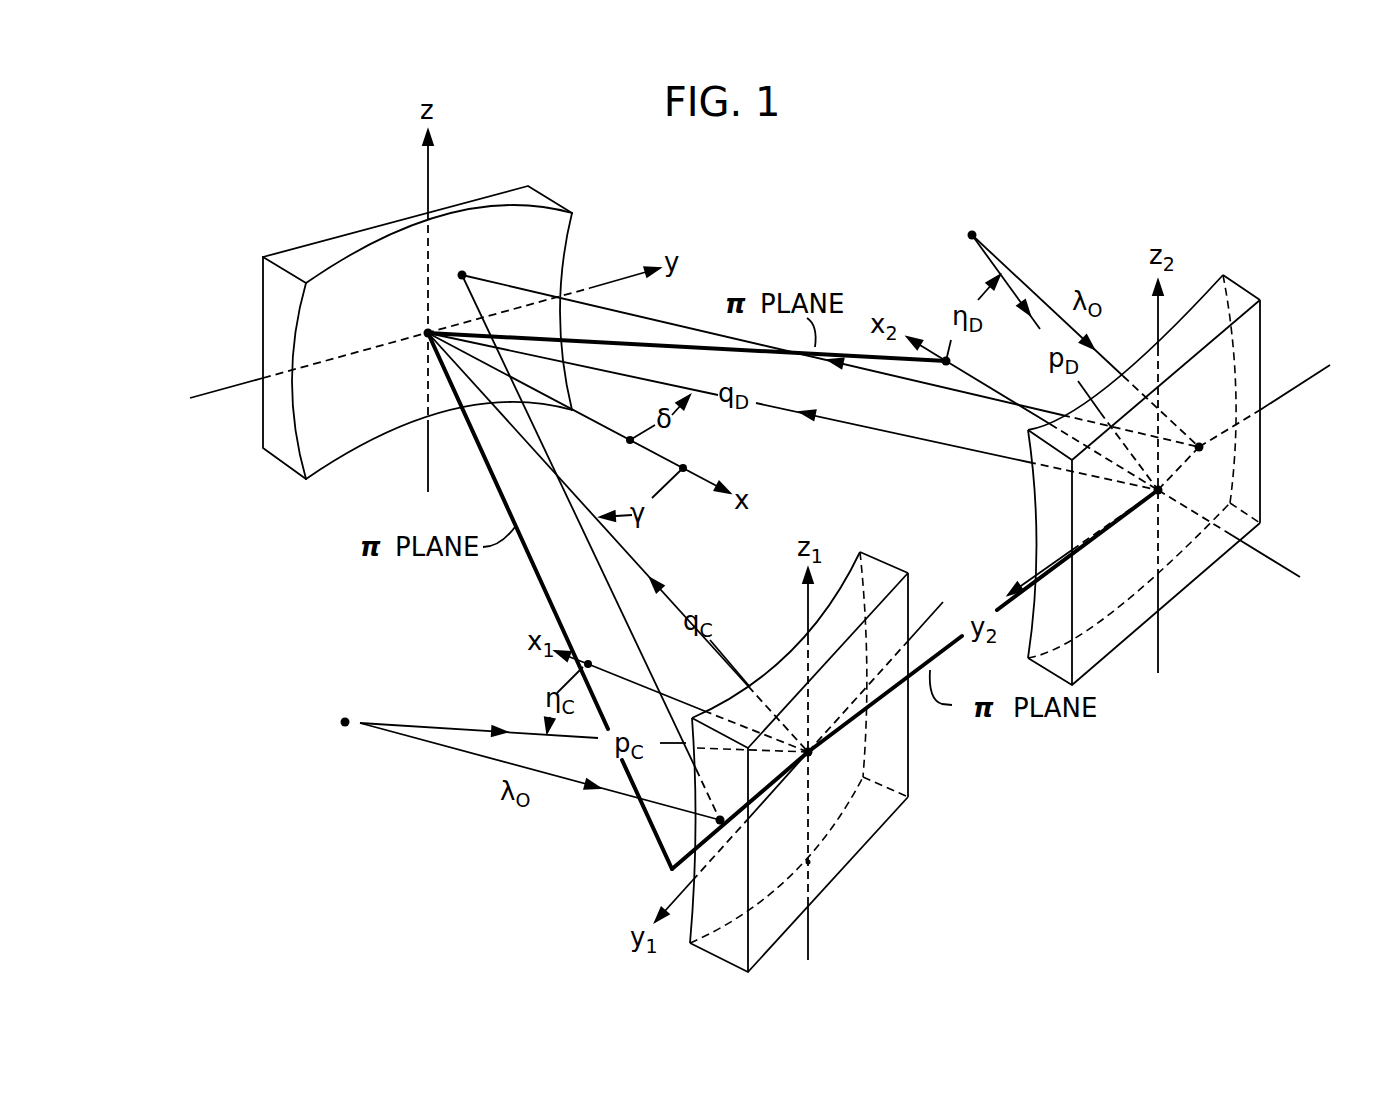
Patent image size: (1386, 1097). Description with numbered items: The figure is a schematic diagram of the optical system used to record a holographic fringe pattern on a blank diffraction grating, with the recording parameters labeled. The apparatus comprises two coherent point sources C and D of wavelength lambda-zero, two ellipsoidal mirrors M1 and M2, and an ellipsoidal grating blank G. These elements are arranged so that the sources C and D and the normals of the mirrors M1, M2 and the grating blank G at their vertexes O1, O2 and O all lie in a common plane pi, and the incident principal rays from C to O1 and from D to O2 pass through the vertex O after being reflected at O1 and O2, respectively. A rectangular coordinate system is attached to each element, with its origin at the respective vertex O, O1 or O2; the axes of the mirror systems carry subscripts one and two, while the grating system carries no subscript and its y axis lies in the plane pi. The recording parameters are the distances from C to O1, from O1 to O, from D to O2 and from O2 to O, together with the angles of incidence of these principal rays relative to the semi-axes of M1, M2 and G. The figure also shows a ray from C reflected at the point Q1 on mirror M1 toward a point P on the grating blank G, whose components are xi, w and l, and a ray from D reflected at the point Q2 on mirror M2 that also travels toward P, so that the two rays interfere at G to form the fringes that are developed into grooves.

The grating blank G is at (417, 316).
The first ellipsoidal mirror M1 is at (819, 762).
The second ellipsoidal mirror M2 is at (1144, 480).
The vertex of grating blank O is at (416, 353).
The point on the grating P is at (515, 258).
The first coherent point source C is at (353, 728).
The second coherent point source D is at (1038, 188).
The vertex of first mirror O1 is at (827, 767).
The vertex of second mirror O2 is at (1182, 509).
The reflection point on first mirror Q1 is at (900, 885).
The reflection point on second mirror Q2 is at (1244, 427).